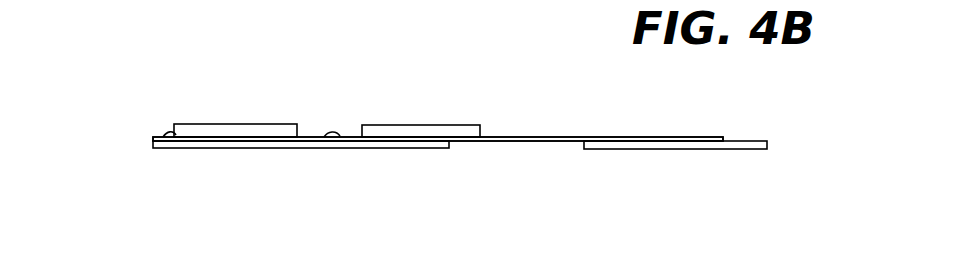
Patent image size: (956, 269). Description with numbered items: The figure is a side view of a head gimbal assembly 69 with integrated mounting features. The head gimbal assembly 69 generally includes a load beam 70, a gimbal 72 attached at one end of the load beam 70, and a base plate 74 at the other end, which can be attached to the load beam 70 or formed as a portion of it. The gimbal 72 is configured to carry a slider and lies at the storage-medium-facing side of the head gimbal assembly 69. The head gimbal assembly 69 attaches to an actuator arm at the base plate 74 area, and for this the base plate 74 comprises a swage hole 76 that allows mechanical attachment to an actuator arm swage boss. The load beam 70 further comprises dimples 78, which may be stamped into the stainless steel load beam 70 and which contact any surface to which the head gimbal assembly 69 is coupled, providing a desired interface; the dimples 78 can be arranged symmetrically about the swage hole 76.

The head gimbal assembly 69 is at (502, 158).
The load beam 70 is at (658, 136).
The gimbal 72 is at (732, 150).
The base plate 74 is at (228, 148).
The swage hole 76 is at (231, 110).
The dimples 78 is at (167, 132).